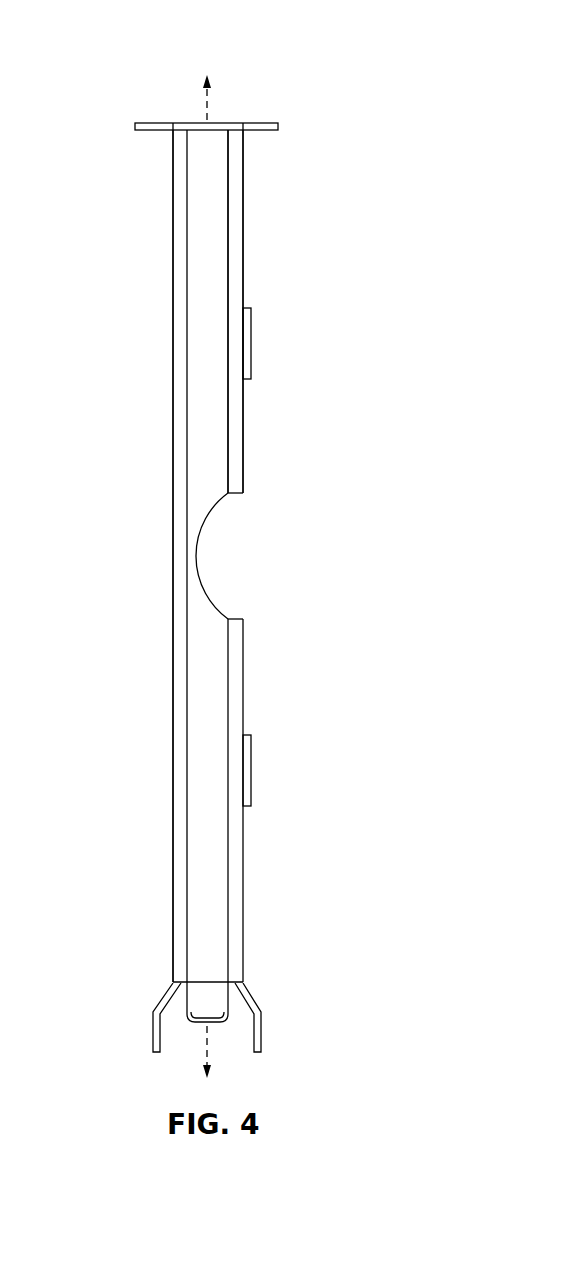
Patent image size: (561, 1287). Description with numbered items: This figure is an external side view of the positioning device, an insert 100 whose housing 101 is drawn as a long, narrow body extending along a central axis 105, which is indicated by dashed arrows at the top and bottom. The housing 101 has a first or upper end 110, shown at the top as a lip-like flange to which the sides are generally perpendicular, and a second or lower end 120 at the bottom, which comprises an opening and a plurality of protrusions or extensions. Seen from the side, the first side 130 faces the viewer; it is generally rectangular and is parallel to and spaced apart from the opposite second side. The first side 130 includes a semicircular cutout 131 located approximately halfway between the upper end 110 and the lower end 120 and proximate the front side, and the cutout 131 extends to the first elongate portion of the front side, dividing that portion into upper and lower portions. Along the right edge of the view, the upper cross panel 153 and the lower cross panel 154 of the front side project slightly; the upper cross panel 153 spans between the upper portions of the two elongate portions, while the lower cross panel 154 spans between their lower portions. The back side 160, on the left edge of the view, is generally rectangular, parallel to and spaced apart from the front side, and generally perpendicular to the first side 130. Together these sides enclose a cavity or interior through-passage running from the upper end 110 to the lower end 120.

The insert 100 is at (380, 40).
The housing 101 is at (270, 193).
The central axis 105 is at (217, 99).
The upper end 110 is at (273, 113).
The lower end 120 is at (263, 999).
The first side 130 is at (215, 415).
The cutout 131 is at (226, 593).
The upper cross panel 153 is at (251, 343).
The lower cross panel 154 is at (251, 772).
The back side 160 is at (160, 210).